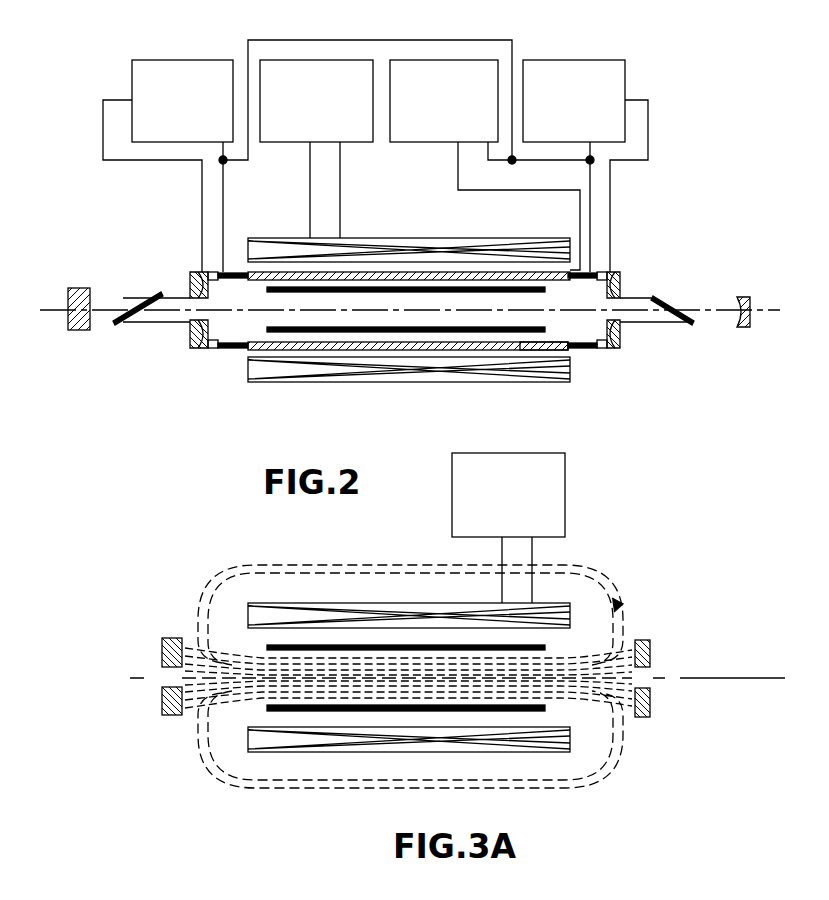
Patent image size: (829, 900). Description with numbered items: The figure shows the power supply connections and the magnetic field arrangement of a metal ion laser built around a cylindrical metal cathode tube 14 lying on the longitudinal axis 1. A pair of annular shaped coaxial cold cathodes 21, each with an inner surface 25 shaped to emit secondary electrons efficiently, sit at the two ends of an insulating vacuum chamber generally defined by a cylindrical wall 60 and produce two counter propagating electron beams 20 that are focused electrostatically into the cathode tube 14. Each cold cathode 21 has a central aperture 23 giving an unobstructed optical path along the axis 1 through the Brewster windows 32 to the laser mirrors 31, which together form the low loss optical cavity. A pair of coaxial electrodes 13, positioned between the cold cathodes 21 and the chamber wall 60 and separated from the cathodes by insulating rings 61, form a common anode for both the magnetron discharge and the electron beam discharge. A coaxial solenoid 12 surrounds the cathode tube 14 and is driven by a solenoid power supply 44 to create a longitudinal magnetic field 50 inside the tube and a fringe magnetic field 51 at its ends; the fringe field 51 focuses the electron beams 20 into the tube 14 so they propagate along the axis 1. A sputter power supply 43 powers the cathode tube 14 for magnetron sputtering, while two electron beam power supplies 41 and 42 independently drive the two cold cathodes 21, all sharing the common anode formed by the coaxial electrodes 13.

In FIG. 2, the longitudinal axis 1 is at (712, 312).
In FIG. 3A, the longitudinal axis 1 is at (715, 678).
In FIG. 2, the coaxial solenoid 12 is at (403, 382).
In FIG. 3A, the coaxial solenoid 12 is at (567, 603).
In FIG. 2, the coaxial electrodes 13 is at (232, 350).
In FIG. 2, the cylindrical metal cathode tube 14 is at (463, 333).
In FIG. 3A, the cylindrical metal cathode tube 14 is at (305, 707).
In FIG. 3A, the counter propagating electron beams 20 is at (202, 697).
In FIG. 2, the annular shaped coaxial cold cathodes 21 is at (203, 350).
In FIG. 3A, the annular shaped coaxial cold cathodes 21 is at (183, 717).
In FIG. 2, the aperture 23 is at (190, 340).
In FIG. 2, the inner surface 25 is at (200, 272).
In FIG. 3A, the inner surface 25 is at (195, 658).
In FIG. 2, the laser mirrors 31 is at (82, 330).
In FIG. 2, the Brewster windows 32 is at (120, 324).
In FIG. 2, the electron beam power supply 41 is at (165, 60).
In FIG. 2, the electron beam power supply 42 is at (580, 60).
In FIG. 2, the sputter power supply 43 is at (450, 60).
In FIG. 2, the solenoid power supply 44 is at (322, 60).
In FIG. 3A, the solenoid power supply 44 is at (565, 488).
In FIG. 3A, the longitudinal magnetic field 50 is at (478, 690).
In FIG. 3A, the fringe magnetic field 51 is at (622, 738).
In FIG. 2, the cylindrical wall 60 is at (512, 348).
In FIG. 2, the insulating rings 61 is at (222, 350).